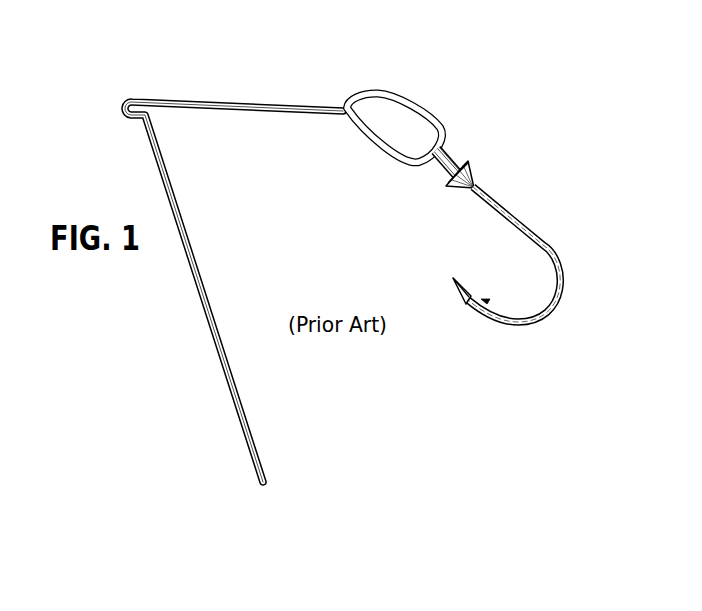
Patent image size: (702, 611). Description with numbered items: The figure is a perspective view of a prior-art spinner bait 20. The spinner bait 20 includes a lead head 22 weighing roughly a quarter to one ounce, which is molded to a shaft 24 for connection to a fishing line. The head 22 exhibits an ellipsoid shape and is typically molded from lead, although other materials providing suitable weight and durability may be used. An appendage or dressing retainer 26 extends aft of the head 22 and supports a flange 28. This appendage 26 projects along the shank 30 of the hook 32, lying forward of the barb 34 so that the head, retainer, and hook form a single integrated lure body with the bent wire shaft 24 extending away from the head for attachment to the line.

The spinner bait 20 is at (344, 70).
The lead head 22 is at (427, 103).
The shaft 24 is at (225, 113).
The appendage or dressing retainer 26 is at (448, 153).
The flange 28 is at (463, 191).
The shank 30 is at (510, 211).
The hook 32 is at (530, 323).
The barb 34 is at (488, 301).